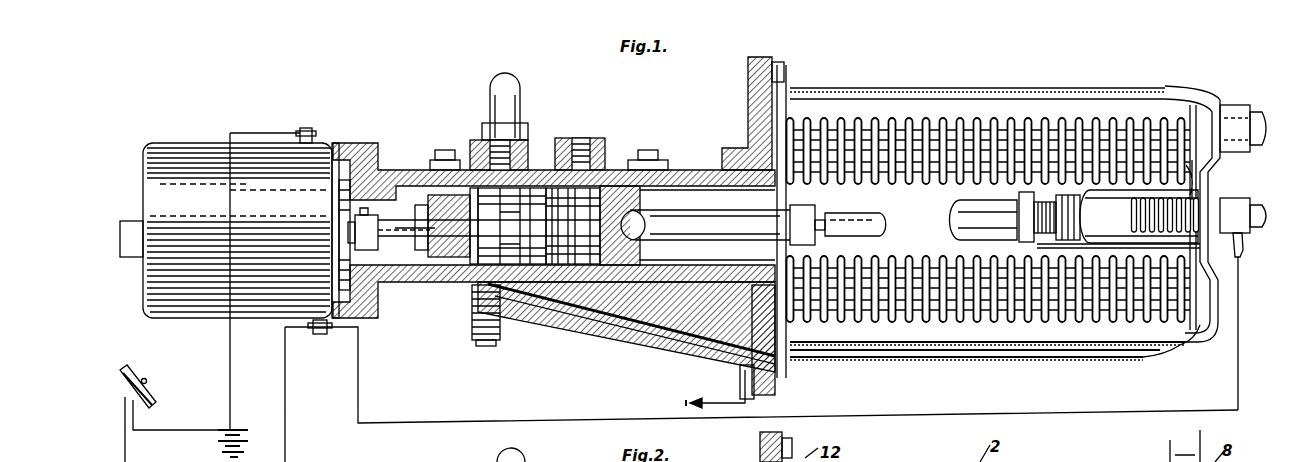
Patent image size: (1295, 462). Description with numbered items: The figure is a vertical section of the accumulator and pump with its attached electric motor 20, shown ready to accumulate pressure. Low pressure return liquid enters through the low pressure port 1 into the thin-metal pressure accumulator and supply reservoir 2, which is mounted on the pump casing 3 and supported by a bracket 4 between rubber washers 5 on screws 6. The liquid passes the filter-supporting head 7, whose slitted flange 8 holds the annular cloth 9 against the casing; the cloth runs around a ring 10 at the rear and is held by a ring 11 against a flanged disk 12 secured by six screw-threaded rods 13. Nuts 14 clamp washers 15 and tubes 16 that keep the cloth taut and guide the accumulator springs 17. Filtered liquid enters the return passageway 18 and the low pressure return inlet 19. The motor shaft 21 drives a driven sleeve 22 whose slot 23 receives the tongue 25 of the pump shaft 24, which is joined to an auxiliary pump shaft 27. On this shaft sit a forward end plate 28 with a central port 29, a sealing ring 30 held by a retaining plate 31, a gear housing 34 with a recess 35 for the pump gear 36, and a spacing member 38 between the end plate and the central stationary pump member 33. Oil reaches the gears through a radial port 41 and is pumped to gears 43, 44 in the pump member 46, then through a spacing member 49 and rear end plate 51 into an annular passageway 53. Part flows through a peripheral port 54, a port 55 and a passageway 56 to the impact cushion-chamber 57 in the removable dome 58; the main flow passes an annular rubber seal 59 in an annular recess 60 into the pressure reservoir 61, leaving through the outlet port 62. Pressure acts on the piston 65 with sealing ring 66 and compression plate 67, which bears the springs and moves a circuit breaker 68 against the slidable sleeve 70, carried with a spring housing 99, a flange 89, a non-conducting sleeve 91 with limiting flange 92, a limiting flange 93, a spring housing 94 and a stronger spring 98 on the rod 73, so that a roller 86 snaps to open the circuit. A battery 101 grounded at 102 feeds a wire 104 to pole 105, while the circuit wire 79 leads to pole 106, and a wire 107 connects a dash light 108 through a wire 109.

The low pressure port 1 is at (1228, 110).
The pressure accumulator and supply reservoir 2 is at (975, 99).
The pump casing 3 is at (690, 170).
The bracket 4 is at (640, 162).
The rubber washers 5 is at (660, 160).
The screws 6 is at (655, 150).
The filter-supporting head 7 is at (1145, 86).
The slitted flange 8 is at (1214, 102).
The annular cloth 9 is at (1020, 99).
The ring 10 is at (1200, 335).
The ring 11 is at (788, 95).
The flanged disk 12 is at (750, 120).
The screw-threaded rods 13 is at (745, 150).
The nuts 14 is at (1192, 105).
The washers 15 is at (1180, 92).
The tubes 16 is at (920, 118).
The accumulator springs 17 is at (885, 118).
The return passageway 18 is at (690, 332).
The low pressure return inlet 19 is at (470, 300).
The electric motor 20 is at (182, 312).
The shaft 21 is at (336, 243).
The driven sleeve 22 is at (390, 185).
The slot 23 is at (435, 165).
The pump shaft 24 is at (410, 282).
The tongue 25 is at (378, 245).
The auxiliary pump shaft 27 is at (532, 247).
The forward end plate 28 is at (460, 165).
The central port 29 is at (430, 282).
The sealing ring 30 is at (440, 285).
The retaining plate 31 is at (443, 150).
The central stationary pump member 33 is at (505, 300).
The gear housing 34 is at (480, 140).
The recess 35 is at (452, 282).
The pump gear 36 is at (446, 226).
The spacing member 38 is at (489, 229).
The radial port 41 is at (502, 247).
The gear 43 is at (525, 207).
The gear 44 is at (530, 305).
The pump member 46 is at (540, 188).
The spacing member 49 is at (540, 292).
The rear end plate 51 is at (560, 262).
The annular passageway 53 is at (590, 150).
The peripheral port 54 is at (565, 138).
The port 55 is at (528, 140).
The passageway 56 is at (512, 226).
The impact cushion-chamber 57 is at (522, 92).
The removable dome 58 is at (495, 86).
The annular rubber seal 59 is at (612, 172).
The annular recess 60 is at (575, 262).
The pressure reservoir 61 is at (600, 262).
The outlet port 62 is at (615, 170).
The piston 65 is at (622, 225).
The sealing ring 66 is at (640, 160).
The compression plate 67 is at (775, 195).
The circuit breaker 68 is at (870, 213).
The slidable sleeve 70 is at (962, 215).
The rod 73 is at (1250, 262).
The circuit wire 79 is at (1060, 416).
The roller 86 is at (1069, 217).
The flange 89 is at (1050, 202).
The non-conducting sleeve 91 is at (1050, 252).
The limiting flange 92 is at (1020, 198).
The limiting flange 93 is at (1085, 212).
The spring housing 94 is at (1132, 222).
The spring 98 is at (1196, 182).
The spring housing 99 is at (962, 230).
The battery 101 is at (240, 428).
The ground 102 is at (244, 452).
The wire 104 is at (228, 191).
The pole 105 is at (312, 133).
The pole 106 is at (320, 334).
The wire 107 is at (285, 400).
The dash light 108 is at (150, 380).
The wire 109 is at (180, 432).